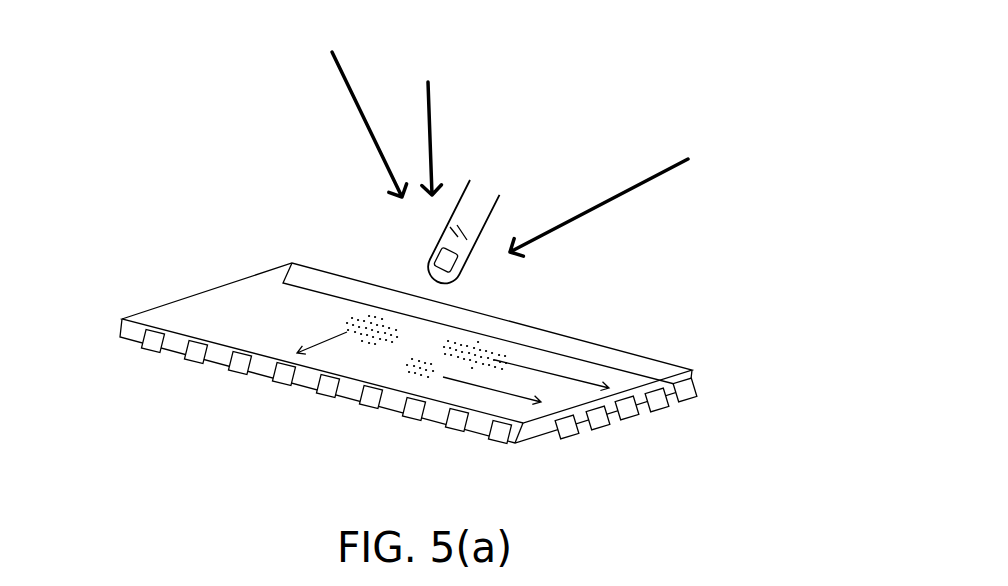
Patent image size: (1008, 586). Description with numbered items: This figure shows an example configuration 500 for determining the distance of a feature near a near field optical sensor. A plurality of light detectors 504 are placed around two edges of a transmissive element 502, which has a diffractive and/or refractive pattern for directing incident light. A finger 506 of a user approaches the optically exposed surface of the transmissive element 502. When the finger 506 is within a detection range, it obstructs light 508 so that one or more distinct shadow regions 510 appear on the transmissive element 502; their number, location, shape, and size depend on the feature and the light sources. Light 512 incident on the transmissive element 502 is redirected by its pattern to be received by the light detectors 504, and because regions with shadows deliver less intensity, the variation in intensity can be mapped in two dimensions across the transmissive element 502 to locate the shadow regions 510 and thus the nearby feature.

The example configuration 500 is at (817, 165).
The transmissive element 502 is at (121, 320).
The light detectors 504 is at (578, 440).
The finger 506 is at (500, 198).
The light 508 is at (353, 100).
The shadow regions 510 is at (465, 358).
The light 512 is at (572, 380).